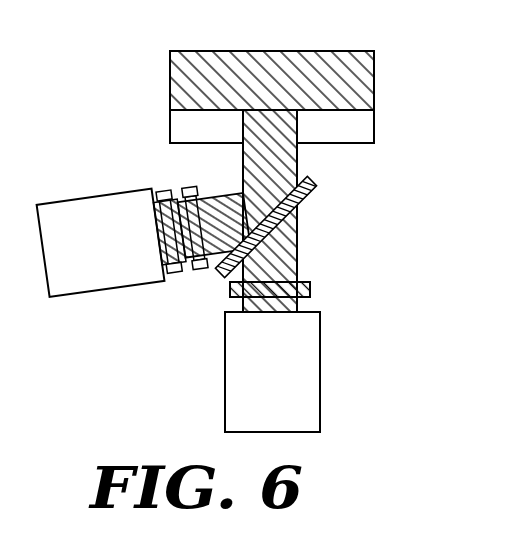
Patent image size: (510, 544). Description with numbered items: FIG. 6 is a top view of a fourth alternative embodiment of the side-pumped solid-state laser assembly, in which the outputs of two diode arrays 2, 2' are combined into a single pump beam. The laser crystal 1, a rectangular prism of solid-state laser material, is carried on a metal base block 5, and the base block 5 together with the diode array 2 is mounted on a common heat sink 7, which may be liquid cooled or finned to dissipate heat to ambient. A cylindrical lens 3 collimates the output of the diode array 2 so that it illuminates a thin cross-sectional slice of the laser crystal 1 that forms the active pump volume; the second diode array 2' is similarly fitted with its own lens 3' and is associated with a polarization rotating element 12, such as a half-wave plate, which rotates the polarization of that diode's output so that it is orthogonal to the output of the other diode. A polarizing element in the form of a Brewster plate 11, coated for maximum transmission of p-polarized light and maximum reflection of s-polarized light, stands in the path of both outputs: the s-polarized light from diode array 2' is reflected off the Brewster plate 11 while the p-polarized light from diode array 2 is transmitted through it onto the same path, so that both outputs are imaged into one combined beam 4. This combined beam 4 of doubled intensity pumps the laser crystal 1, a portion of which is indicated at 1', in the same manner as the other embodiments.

The heat sink 7 is at (296, 53).
The laser crystal 1 is at (189, 126).
The combined beam 4 is at (303, 126).
The vertical stem 1' is at (295, 211).
The base block 5 is at (233, 195).
The polarization rotating element 12 is at (192, 192).
The clamping plate 3' is at (168, 257).
The diode array 2' is at (101, 261).
The Brewster plate 11 is at (311, 187).
The cylindrical lens 3 is at (244, 312).
The laser diode array 2 is at (247, 372).